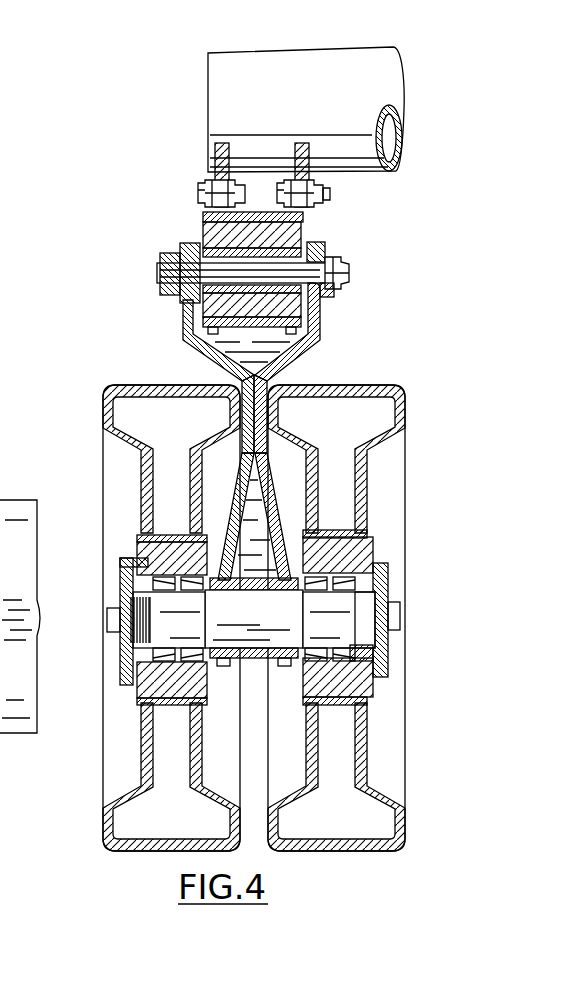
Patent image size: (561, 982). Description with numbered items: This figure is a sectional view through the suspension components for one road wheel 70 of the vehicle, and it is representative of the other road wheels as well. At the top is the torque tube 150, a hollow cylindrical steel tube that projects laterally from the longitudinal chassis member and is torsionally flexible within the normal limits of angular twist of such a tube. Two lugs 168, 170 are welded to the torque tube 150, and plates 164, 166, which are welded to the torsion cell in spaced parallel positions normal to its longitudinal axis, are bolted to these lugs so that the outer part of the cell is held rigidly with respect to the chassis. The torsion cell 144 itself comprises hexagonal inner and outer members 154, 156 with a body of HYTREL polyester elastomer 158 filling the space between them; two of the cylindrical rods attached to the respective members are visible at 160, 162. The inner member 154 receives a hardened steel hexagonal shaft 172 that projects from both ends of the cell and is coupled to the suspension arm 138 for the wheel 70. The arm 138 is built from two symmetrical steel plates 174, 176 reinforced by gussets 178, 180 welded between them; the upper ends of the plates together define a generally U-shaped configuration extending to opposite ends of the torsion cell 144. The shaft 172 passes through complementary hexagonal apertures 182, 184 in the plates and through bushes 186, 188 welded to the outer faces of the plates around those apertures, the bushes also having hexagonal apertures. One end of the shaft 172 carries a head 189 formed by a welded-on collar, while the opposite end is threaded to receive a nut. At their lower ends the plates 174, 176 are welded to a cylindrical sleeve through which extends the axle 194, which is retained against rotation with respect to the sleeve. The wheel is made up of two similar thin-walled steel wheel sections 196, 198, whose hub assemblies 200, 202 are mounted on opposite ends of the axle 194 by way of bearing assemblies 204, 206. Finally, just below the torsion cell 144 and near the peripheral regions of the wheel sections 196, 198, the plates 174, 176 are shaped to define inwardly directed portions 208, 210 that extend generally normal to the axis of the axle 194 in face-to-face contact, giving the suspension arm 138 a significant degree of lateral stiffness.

The road wheel 70 is at (297, 618).
The suspension arm 138 is at (297, 431).
The torsion cell 144 is at (289, 201).
The torque tube 150 is at (387, 94).
The inner member 154 is at (313, 243).
The outer member 156 is at (203, 212).
The body of HYTREL polyester elastomer 158 is at (303, 219).
The cylindrical rod 160 is at (205, 247).
The cylindrical rod 162 is at (330, 193).
The plate 164 is at (214, 174).
The plate 166 is at (323, 182).
The lug 168 is at (221, 143).
The lug 170 is at (303, 142).
The hexagonal shaft 172 is at (348, 263).
The steel plate 174 is at (197, 345).
The steel plate 176 is at (320, 329).
The gusset 178 is at (259, 404).
The gusset 180 is at (258, 516).
The hexagonal aperture 182 is at (193, 298).
The hexagonal aperture 184 is at (345, 285).
The bush 186 is at (187, 243).
The bush 188 is at (328, 300).
The head 189 is at (166, 297).
The axle 194 is at (254, 622).
The wheel section 196 is at (374, 511).
The wheel section 198 is at (133, 750).
The hub assembly 200 is at (398, 587).
The hub assembly 202 is at (113, 574).
The bearing assembly 204 is at (380, 653).
The bearing assembly 206 is at (130, 657).
The inwardly directed portion 208 is at (243, 407).
The inwardly directed portion 210 is at (266, 408).